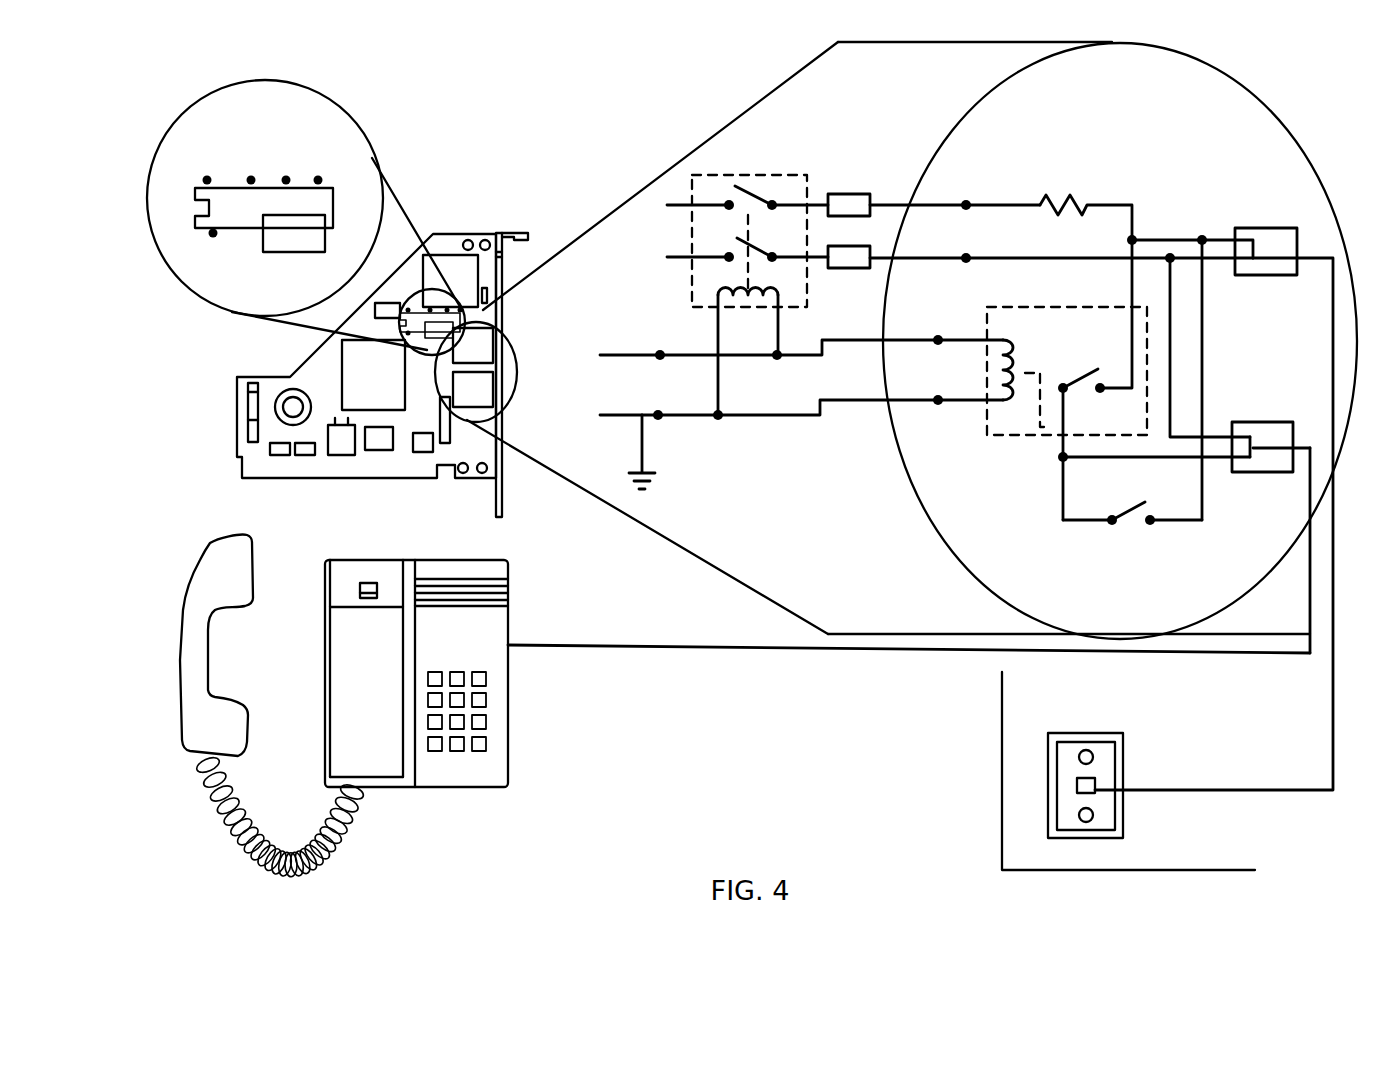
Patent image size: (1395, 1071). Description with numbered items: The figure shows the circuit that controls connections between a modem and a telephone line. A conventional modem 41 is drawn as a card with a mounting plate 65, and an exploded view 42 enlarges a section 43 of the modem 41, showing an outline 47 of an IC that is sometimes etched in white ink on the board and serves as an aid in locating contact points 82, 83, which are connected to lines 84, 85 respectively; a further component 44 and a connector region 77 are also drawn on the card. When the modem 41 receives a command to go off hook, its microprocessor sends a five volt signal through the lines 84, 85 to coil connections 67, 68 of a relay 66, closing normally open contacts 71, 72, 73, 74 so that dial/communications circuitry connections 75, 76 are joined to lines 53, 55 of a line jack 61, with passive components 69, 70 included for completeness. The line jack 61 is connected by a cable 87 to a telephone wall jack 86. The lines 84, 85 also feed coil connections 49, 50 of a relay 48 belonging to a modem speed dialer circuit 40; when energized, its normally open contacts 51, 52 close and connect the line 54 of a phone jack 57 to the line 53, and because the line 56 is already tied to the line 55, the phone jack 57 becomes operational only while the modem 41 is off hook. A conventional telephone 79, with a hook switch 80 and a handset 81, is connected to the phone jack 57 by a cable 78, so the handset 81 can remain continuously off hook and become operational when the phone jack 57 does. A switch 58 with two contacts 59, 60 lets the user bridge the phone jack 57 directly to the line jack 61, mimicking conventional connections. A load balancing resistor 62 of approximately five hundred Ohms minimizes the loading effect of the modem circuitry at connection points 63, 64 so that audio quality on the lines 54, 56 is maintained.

The modem speed dialer circuit 40 is at (903, 477).
The modem 41 is at (236, 441).
The exploded view 42 is at (176, 268).
The section of the modem 43 is at (405, 302).
The connector body 44 is at (291, 253).
The outline of an IC 47 is at (333, 201).
The relay 48 is at (998, 445).
The coil connection 49 is at (950, 347).
The coil connection 50 is at (952, 407).
The normally open contact 51 is at (1064, 382).
The normally open contact 52 is at (1102, 394).
The line 53 is at (1222, 226).
The line 54 is at (1224, 466).
The line 55 is at (1228, 272).
The line 56 is at (1216, 436).
The phone jack 57 is at (1268, 474).
The switch 58 is at (1128, 522).
The contact 59 is at (1108, 526).
The contact 60 is at (1152, 526).
The line jack 61 is at (1270, 280).
The load balancing resistor 62 is at (1065, 200).
The connection point 63 is at (952, 203).
The connection point 64 is at (936, 257).
The mounting plate 65 is at (500, 457).
The relay 66 is at (776, 160).
The coil connection 67 is at (716, 322).
The coil connection 68 is at (770, 315).
The passive component 69 is at (852, 193).
The passive component 70 is at (849, 270).
The normally open contact 71 is at (730, 186).
The normally open contact 72 is at (727, 252).
The normally open contact 73 is at (775, 210).
The normally open contact 74 is at (775, 260).
The dial/communications circuitry connection 75 is at (668, 207).
The dial/communications circuitry connection 76 is at (667, 259).
The connector area 77 is at (517, 368).
The cable 78 is at (602, 648).
The telephone 79 is at (452, 560).
The hook switch 80 is at (365, 582).
The telephone handset 81 is at (184, 592).
The contact point 82 is at (213, 238).
The contact point 83 is at (209, 172).
The line 84 is at (617, 359).
The line 85 is at (607, 419).
The telephone wall jack 86 is at (1080, 732).
The cable 87 is at (1332, 702).